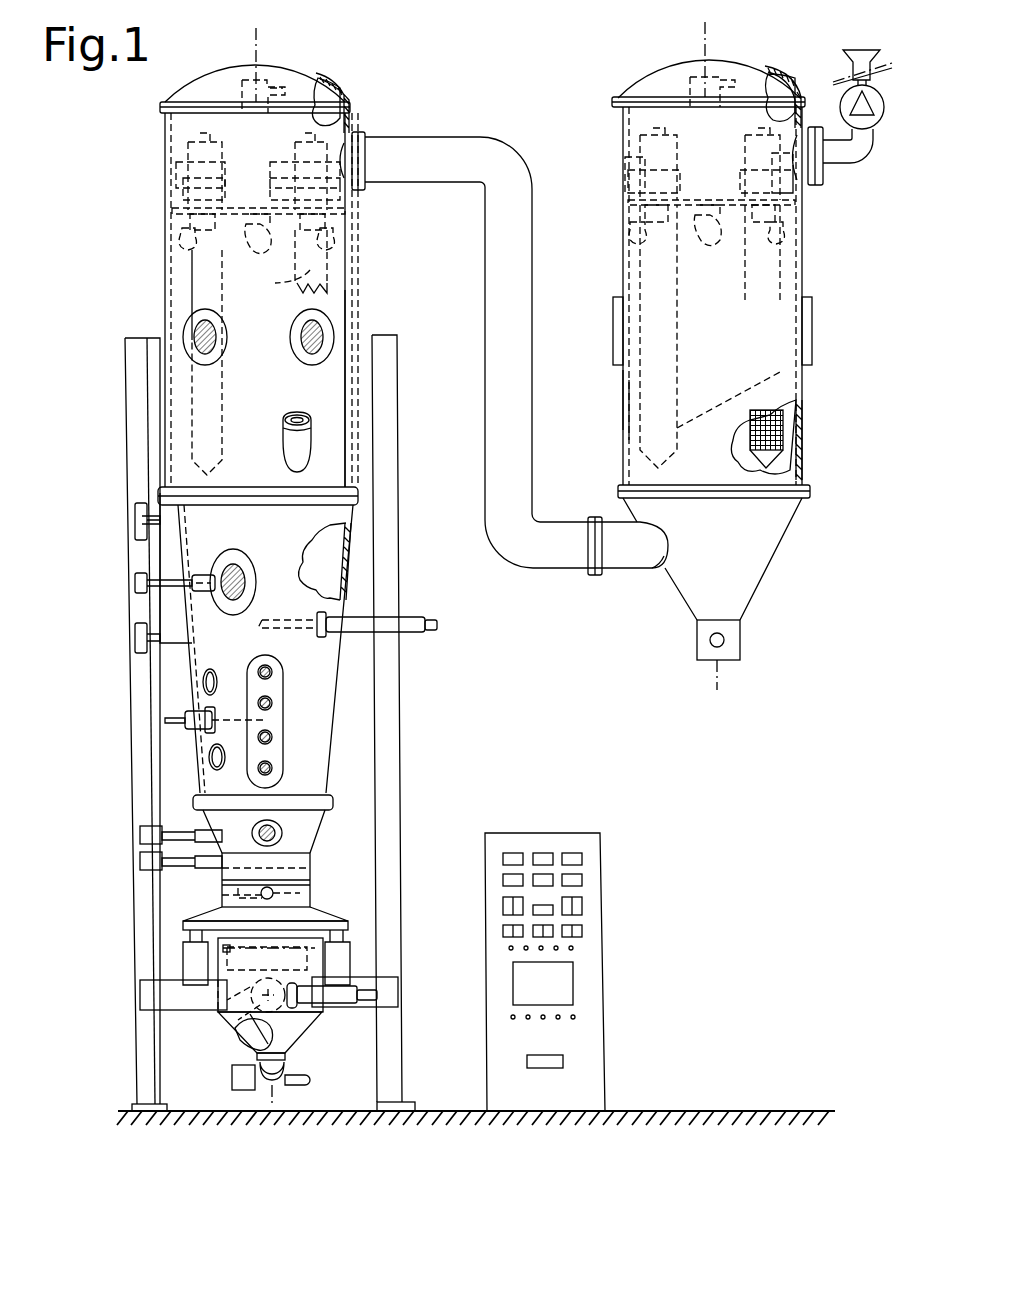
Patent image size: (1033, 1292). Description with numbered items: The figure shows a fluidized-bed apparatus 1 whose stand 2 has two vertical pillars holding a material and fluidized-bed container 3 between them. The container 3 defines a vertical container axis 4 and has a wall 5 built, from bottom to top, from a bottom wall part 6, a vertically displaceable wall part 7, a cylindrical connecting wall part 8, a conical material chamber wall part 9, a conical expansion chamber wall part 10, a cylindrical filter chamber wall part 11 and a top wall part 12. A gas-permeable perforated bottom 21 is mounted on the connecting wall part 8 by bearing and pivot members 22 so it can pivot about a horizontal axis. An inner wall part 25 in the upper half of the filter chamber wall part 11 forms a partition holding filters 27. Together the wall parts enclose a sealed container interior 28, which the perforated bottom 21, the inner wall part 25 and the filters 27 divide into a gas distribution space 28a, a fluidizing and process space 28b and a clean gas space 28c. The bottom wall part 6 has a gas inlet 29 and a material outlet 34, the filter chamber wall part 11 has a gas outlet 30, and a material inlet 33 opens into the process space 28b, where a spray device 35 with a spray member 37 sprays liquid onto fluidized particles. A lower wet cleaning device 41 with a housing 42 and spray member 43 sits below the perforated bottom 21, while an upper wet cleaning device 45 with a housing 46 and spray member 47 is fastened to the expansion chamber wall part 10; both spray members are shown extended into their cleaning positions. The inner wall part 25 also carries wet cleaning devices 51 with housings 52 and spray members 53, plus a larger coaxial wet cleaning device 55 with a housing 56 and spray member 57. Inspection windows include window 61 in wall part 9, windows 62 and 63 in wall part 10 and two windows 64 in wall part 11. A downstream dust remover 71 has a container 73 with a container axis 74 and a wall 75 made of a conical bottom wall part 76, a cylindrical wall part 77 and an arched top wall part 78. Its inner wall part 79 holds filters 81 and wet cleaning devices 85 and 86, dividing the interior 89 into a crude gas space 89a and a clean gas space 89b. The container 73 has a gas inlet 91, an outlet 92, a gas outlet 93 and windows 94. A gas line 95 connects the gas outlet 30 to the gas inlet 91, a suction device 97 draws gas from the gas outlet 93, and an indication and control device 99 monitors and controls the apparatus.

The fluidized-bed apparatus 1 is at (150, 118).
The stand 2 is at (133, 350).
The material and fluidized-bed container 3 is at (203, 74).
The container axis 4 is at (250, 48).
The wall 5 is at (165, 87).
The bottom wall part 6 is at (300, 1035).
The vertically displaceable wall part 7 is at (310, 935).
The connecting wall part 8 is at (312, 892).
The conical material chamber wall part 9 is at (318, 838).
The conical expansion chamber wall part 10 is at (322, 720).
The cylindrical filter chamber wall part 11 is at (350, 298).
The top wall part 12 is at (350, 85).
The perforated bottom 21 is at (250, 895).
The bearing and pivot members 22 is at (200, 920).
The inner wall part 25 is at (320, 265).
The filter 27 is at (188, 271).
The container interior 28 is at (330, 545).
The gas distribution space 28a is at (258, 1058).
The fluidizing and process space 28b is at (335, 572).
The clean gas space 28c is at (328, 92).
The gas inlet 29 is at (245, 1030).
The gas outlet 30 is at (360, 133).
The material inlet 33 is at (302, 418).
The material outlet 34 is at (282, 1068).
The spray device 35 is at (185, 720).
The spray member 37 is at (290, 710).
The wet cleaning device 41 is at (390, 1020).
The housing 42 is at (375, 985).
The spray member 43 is at (235, 1005).
The wet cleaning device 45 is at (430, 630).
The housing 46 is at (392, 620).
The spray member 47 is at (340, 605).
The wet cleaning devices 51 is at (176, 172).
The housing 52 is at (175, 192).
The spray member 53 is at (178, 250).
The wet cleaning device 55 is at (280, 80).
The housing 56 is at (265, 75).
The spray member 57 is at (330, 282).
The window 61 is at (262, 830).
The window 62 is at (290, 742).
The window 63 is at (245, 585).
The windows 64 is at (200, 328).
The downstream dust remover 71 is at (612, 125).
The downstream dust remover container 73 is at (621, 395).
The container axis 74 is at (700, 45).
The wall 75 is at (621, 428).
The bottom wall part 76 is at (770, 575).
The cylindrical wall part 77 is at (810, 462).
The top wall part 78 is at (760, 80).
The inner wall part 79 is at (790, 245).
The filter 81 is at (790, 400).
The wet cleaning devices 85 is at (630, 168).
The wet cleaning device 86 is at (718, 78).
The interior 89 is at (795, 430).
The crude gas space 89a is at (790, 455).
The clean gas space 89b is at (795, 85).
The gas inlet 91 is at (660, 572).
The outlet 92 is at (742, 640).
The gas outlet 93 is at (807, 128).
The window 94 is at (612, 335).
The gas line 95 is at (540, 458).
The suction device 97 is at (880, 118).
The indication and control device 99 is at (540, 833).